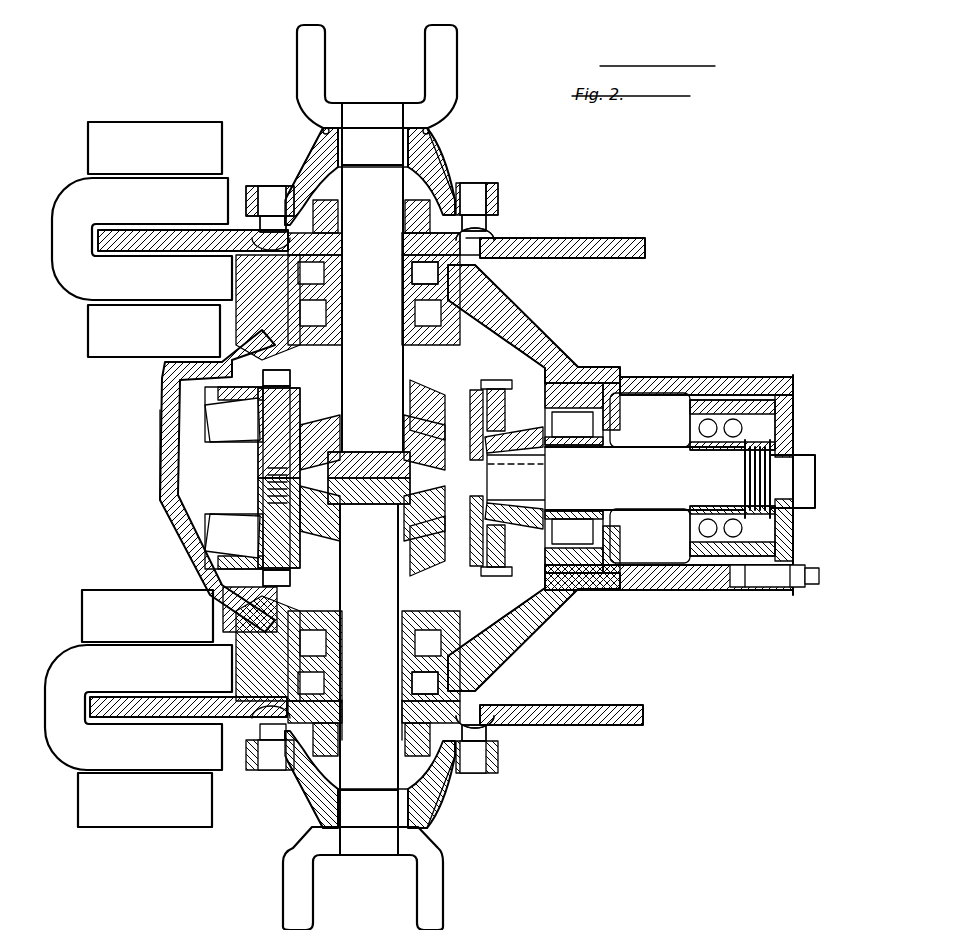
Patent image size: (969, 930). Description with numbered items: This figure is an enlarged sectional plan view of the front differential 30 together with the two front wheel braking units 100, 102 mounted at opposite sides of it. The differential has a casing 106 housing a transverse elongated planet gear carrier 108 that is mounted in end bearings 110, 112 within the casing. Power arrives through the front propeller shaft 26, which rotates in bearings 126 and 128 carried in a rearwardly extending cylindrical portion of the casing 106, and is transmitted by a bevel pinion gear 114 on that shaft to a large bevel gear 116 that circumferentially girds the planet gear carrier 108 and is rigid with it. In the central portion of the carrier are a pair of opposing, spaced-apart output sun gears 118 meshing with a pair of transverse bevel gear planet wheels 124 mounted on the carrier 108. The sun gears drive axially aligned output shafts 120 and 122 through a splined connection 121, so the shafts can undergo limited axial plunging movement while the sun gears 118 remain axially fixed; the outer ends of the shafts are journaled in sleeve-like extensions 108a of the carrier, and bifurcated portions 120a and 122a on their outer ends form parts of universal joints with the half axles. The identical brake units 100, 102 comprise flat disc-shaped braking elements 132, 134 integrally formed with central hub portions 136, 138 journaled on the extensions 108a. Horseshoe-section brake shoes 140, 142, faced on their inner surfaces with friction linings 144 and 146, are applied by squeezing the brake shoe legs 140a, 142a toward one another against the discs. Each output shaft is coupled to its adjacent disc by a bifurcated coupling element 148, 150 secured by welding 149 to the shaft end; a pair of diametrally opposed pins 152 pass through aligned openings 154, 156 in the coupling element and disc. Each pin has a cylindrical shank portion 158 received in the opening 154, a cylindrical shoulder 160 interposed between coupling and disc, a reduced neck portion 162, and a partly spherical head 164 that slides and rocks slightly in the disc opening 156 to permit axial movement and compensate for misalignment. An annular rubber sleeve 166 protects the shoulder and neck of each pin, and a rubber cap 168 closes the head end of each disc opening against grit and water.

The front propeller shaft 26 is at (642, 458).
The front differential 30 is at (150, 450).
The front wheel braking unit 100 is at (178, 90).
The front wheel braking unit 102 is at (138, 858).
The casing 106 is at (165, 508).
The planet gear carrier 108 is at (290, 522).
The sleeve-like extensions 108a is at (438, 288).
The end bearing 110 is at (477, 312).
The end bearing 112 is at (478, 626).
The bevel pinion gear 114 is at (497, 515).
The large bevel gear 116 is at (536, 440).
The output bevel gears or sun gears 118 is at (426, 392).
The output shaft 120 is at (358, 716).
The bifurcated portion 120a is at (437, 883).
The splined connection 121 is at (386, 397).
The output shaft 122 is at (366, 248).
The bifurcated portion 122a is at (450, 73).
The bevel gear planet wheels 124 is at (285, 508).
The bearing 126 is at (582, 408).
The bearing 128 is at (728, 410).
The braking element 132 is at (630, 240).
The braking element 134 is at (592, 705).
The hub portion 136 is at (446, 186).
The hub portion 138 is at (406, 708).
The brake shoe 140 is at (70, 290).
The brake shoe legs 140a is at (207, 187).
The brake shoe 142 is at (73, 742).
The brake shoe legs 142a is at (212, 762).
The friction lining 144 is at (148, 238).
The friction lining 146 is at (129, 716).
The bifurcated coupling element 148 is at (445, 160).
The welding 149 is at (428, 128).
The bifurcated coupling element 150 is at (432, 803).
The pins 152 is at (278, 183).
The opening 154 is at (484, 200).
The opening 156 is at (470, 258).
The cylindrical shank portion 158 is at (268, 198).
The cylindrical shoulder 160 is at (265, 213).
The reduced neck portion 162 is at (488, 225).
The partly spherical head 164 is at (480, 240).
The annular rubber sleeve 166 is at (487, 733).
The rubber cap 168 is at (474, 703).